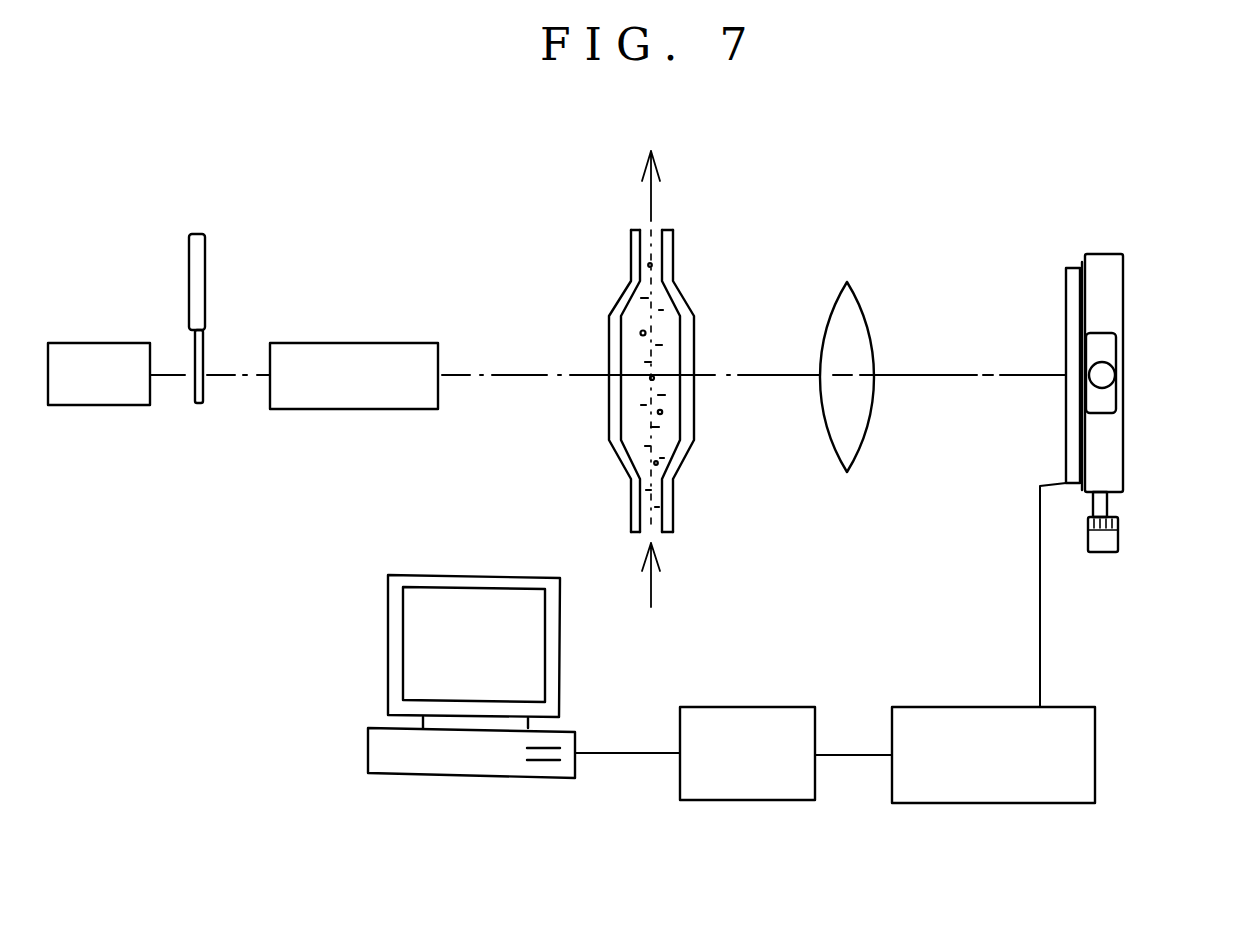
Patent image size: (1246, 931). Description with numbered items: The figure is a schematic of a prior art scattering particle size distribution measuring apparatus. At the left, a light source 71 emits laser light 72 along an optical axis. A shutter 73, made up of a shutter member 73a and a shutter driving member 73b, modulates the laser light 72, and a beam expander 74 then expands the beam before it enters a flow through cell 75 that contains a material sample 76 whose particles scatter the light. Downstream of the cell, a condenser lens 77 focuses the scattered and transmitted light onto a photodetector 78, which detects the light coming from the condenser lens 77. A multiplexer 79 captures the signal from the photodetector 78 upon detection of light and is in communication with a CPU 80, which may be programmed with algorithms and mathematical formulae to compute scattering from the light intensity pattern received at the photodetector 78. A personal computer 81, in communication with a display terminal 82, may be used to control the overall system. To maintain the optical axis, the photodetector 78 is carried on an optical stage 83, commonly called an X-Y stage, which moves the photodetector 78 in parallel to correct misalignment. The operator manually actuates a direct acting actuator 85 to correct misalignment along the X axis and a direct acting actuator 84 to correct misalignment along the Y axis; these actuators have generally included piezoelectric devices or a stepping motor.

The light source 71 is at (83, 343).
The laser light 72 is at (173, 375).
The shutter 73 is at (281, 295).
The shutter member 73a is at (261, 338).
The shutter driving member 73b is at (205, 273).
The beam expander 74 is at (347, 410).
The flow through cell 75 is at (623, 290).
The material sample 76 is at (661, 333).
The condenser lens 77 is at (865, 317).
The photodetector 78 is at (1066, 313).
The multiplexer 79 is at (1002, 805).
The CPU 80 is at (732, 802).
The personal computer 81 is at (368, 742).
The display terminal 82 is at (387, 645).
The optical stage 83 is at (1123, 308).
The direct acting actuator 84 is at (1108, 405).
The direct acting actuator 85 is at (1118, 543).